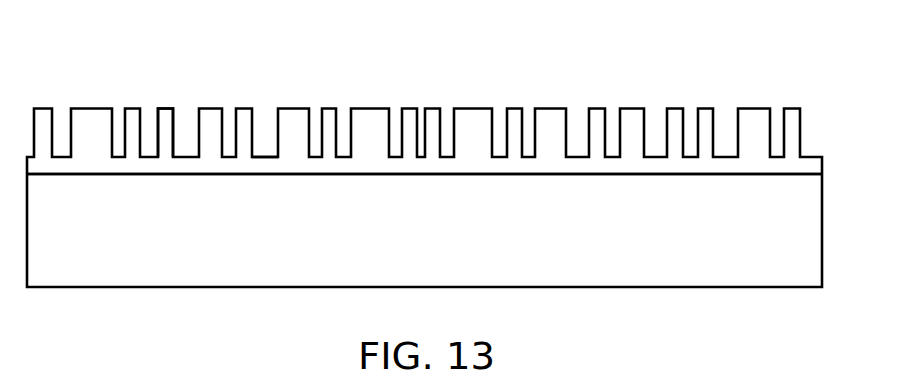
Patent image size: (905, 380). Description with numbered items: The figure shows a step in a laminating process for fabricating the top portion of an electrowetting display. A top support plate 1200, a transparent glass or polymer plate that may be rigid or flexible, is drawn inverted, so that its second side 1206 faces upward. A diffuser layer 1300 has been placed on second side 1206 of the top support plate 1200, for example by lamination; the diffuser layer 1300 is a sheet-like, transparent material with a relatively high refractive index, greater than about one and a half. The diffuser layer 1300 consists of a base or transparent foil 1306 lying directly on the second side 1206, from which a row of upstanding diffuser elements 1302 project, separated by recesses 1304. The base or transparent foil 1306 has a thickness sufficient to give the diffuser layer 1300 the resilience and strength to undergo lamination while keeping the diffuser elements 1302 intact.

The top support plate 1200 is at (120, 254).
The second side 1206 is at (578, 174).
The diffuser layer 1300 is at (822, 160).
The diffuser elements 1302 is at (165, 110).
The recesses 1304 is at (263, 122).
The base or transparent foil 1306 is at (742, 165).